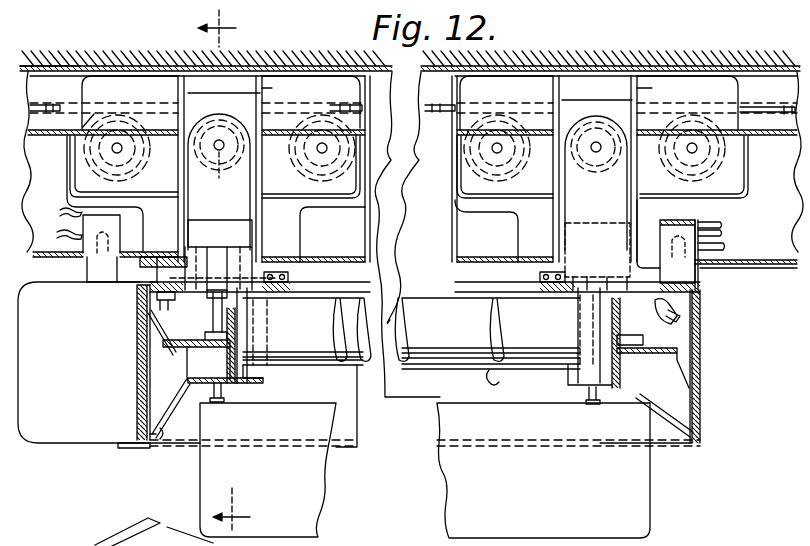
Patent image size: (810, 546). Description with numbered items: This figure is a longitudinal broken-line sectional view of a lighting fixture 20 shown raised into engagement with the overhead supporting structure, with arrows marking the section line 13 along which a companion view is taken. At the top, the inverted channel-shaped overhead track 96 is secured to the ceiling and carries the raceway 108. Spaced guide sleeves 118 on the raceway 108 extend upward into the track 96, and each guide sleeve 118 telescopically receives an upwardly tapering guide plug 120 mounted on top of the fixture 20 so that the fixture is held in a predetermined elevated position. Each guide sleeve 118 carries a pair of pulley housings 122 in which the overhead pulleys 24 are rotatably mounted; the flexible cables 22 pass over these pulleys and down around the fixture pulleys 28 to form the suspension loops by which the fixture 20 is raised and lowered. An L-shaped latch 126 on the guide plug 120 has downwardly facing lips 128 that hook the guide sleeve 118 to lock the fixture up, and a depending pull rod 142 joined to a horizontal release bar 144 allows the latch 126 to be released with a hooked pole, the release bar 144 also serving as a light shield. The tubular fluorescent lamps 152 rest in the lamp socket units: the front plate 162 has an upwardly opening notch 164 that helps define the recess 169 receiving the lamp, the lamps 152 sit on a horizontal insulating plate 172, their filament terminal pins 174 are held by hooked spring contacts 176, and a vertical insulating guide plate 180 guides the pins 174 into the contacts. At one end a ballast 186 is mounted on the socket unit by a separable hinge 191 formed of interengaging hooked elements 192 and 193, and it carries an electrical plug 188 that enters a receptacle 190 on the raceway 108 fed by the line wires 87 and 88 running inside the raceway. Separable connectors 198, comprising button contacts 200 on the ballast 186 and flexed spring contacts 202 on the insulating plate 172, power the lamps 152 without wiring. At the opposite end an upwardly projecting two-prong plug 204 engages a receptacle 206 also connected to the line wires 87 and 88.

The section line 13— 13 is at (236, 270).
The lighting fixture 20 is at (711, 396).
The cable 22 is at (50, 107).
The pulley 24 is at (133, 176).
The pulley 28 is at (597, 242).
The line wire 87 is at (66, 207).
The line wire 88 is at (60, 233).
The overhead track 96 is at (56, 66).
The raceway 108 is at (752, 266).
The guide sleeve 118 is at (475, 92).
The guide plug 120 is at (242, 102).
The pulley housing 122 is at (118, 82).
The latch 126 is at (202, 227).
The lip 128 is at (215, 247).
The pull rod 142 is at (225, 392).
The release bar 144 is at (650, 508).
The tubular fluorescent lamp 152 is at (500, 370).
The front plate 162 is at (263, 378).
The notch 164 is at (263, 355).
The recess 169 is at (265, 320).
The horizontal insulating plate 172 is at (225, 365).
The filament terminal pin 174 is at (212, 328).
The spring contact 176 is at (208, 336).
The insulating guide plate 180 is at (660, 410).
The ballast 186 is at (43, 439).
The electrical plug 188 is at (93, 278).
The receptacle 190 is at (90, 243).
The separable hinge 191 is at (174, 439).
The hooked element 192 is at (160, 444).
The hooked element 193 is at (158, 432).
The separable electrical connector 198 is at (162, 389).
The button contact 200 is at (138, 369).
The spring contact 202 is at (183, 347).
The two-prong plug 204 is at (695, 280).
The receptacle 206 is at (712, 224).